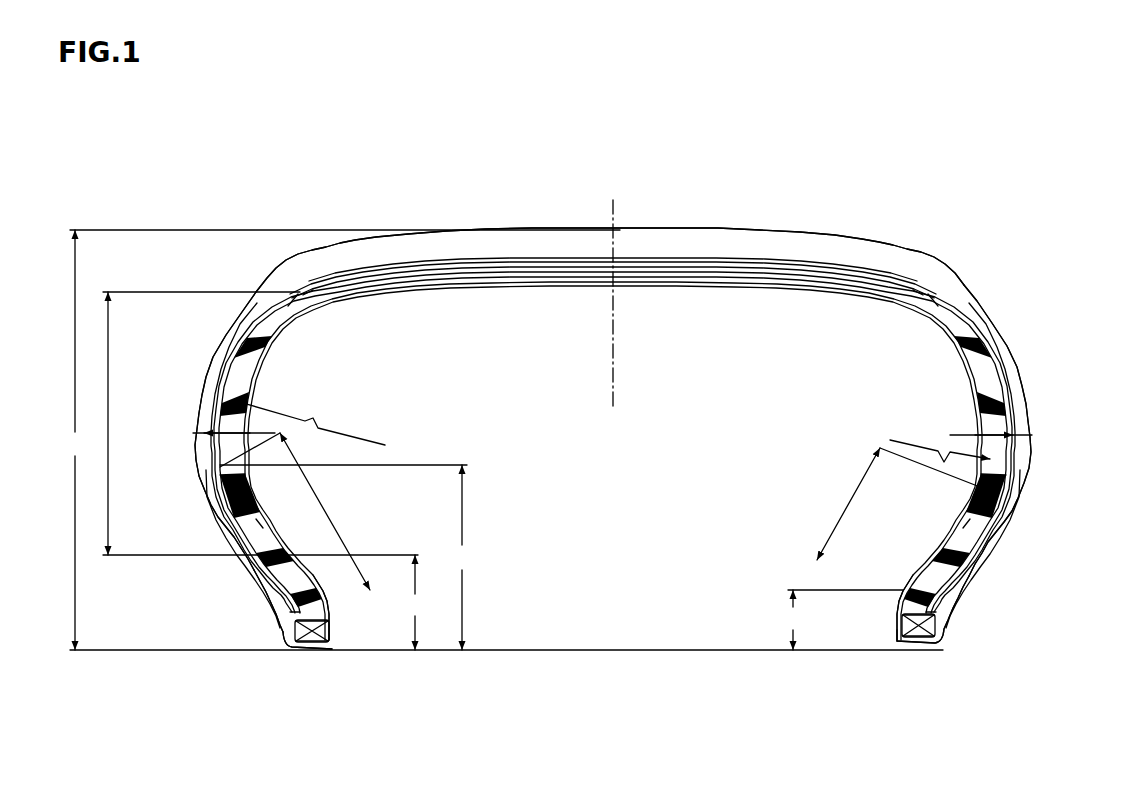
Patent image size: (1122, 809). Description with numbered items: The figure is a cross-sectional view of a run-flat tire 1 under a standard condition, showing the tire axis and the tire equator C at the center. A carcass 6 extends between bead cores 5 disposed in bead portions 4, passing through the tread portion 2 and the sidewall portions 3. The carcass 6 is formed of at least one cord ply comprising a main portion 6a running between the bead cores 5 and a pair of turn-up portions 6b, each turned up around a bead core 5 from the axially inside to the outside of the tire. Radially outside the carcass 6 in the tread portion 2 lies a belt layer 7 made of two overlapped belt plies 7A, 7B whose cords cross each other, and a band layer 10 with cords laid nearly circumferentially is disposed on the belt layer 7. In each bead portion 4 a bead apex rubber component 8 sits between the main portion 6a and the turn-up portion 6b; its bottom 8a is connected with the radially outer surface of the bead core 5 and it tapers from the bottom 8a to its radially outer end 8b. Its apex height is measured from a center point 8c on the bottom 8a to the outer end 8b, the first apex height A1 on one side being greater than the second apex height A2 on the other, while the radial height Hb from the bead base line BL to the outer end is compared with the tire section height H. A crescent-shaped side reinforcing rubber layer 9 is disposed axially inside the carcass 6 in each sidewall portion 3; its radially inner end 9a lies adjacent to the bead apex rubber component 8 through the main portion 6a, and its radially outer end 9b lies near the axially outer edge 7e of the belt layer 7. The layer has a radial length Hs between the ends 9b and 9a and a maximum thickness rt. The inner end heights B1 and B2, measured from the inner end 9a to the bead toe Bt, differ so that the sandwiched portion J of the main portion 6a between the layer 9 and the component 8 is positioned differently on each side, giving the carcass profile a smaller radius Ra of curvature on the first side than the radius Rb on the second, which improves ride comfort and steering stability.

The run-flat tire 1 is at (615, 426).
The tread portion 2 is at (752, 226).
The sidewall portions 3 is at (210, 355).
The bead portions 4 is at (607, 646).
The bead cores 5 is at (313, 643).
The carcass 6 is at (613, 442).
The main portion 6a is at (245, 378).
The turn-up portions 6b is at (230, 400).
The belt layer 7 is at (613, 218).
The belt ply 7A is at (440, 272).
The belt ply 7B is at (484, 270).
The axially outer edge of the belt layer 7e is at (282, 302).
The bead apex rubber components 8 is at (295, 612).
The bottom of the bead apex rubber component 8a is at (293, 630).
The radially outer end of the bead apex rubber component 8b is at (222, 465).
The center point on the bottom 8c is at (300, 618).
The side reinforcing rubber layers 9 is at (250, 380).
The radially inner end of the side reinforcing rubber layer 9a is at (290, 563).
The radially outer end of the side reinforcing rubber layer 9b is at (360, 290).
The band layer 10 is at (575, 262).
The sandwiched portion J is at (248, 522).
The tire equator C is at (610, 294).
The tire section height H is at (343, 440).
The radial length of the side reinforcing rubber layer Hs is at (255, 423).
The radial height of the bead apex rubber component Hb is at (348, 557).
The inner end height of the first side reinforcing rubber layer B1 is at (415, 602).
The inner end height of the second side reinforcing rubber layer B2 is at (843, 620).
The first apex height A1 is at (295, 511).
The second apex height A2 is at (898, 504).
The radius of curvature in the first bead portion Ra is at (355, 435).
The radius of curvature in the second bead portion Rb is at (890, 437).
The thickness of the side reinforcing rubber layer rt is at (200, 432).
The bead base line BL is at (556, 652).
The bead toe Bt is at (897, 640).